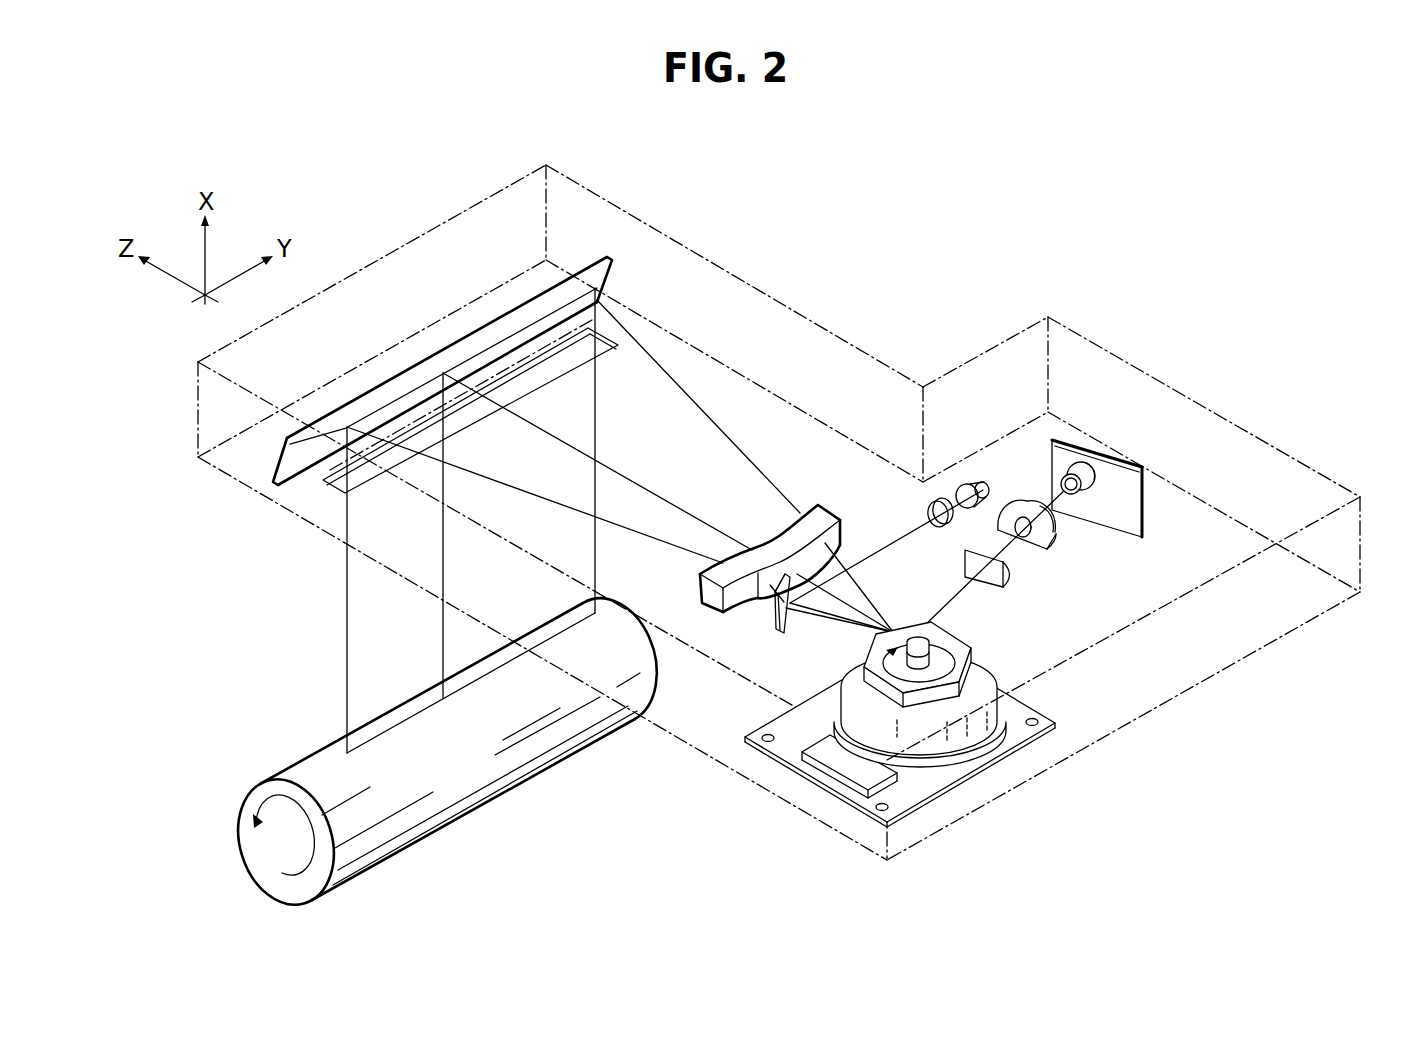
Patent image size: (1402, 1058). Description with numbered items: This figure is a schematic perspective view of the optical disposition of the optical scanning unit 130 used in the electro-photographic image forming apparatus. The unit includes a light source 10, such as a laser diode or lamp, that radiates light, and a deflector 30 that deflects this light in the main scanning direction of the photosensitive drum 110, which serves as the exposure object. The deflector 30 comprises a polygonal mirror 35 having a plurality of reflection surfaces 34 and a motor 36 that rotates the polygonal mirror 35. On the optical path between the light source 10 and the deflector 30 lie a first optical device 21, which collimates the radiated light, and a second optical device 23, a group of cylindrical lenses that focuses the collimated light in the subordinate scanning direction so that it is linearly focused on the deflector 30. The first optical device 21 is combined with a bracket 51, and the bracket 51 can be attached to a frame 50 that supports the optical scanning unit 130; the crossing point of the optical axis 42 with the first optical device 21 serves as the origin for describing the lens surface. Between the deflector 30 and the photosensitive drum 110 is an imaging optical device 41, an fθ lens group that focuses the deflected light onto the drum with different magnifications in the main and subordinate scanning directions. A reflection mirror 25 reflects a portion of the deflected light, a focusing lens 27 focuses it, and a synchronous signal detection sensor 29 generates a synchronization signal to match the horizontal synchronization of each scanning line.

The light source 10 is at (1076, 478).
The first optical device 21 is at (1031, 535).
The second optical device 23 is at (1007, 581).
The reflection mirror 25 is at (778, 628).
The focusing lens 27 is at (940, 497).
The synchronous signal detection sensor 29 is at (973, 483).
The deflector 30 is at (935, 739).
The reflection surfaces 34 is at (933, 697).
The polygonal mirror 35 is at (1000, 728).
The motor 36 is at (978, 725).
The imaging optical device 41 is at (823, 507).
The optical axis 42 is at (955, 600).
The frame 50 is at (1264, 440).
The bracket 51 is at (1057, 538).
The photosensitive drum 110 is at (460, 832).
The optical scanning unit 130 is at (1172, 812).